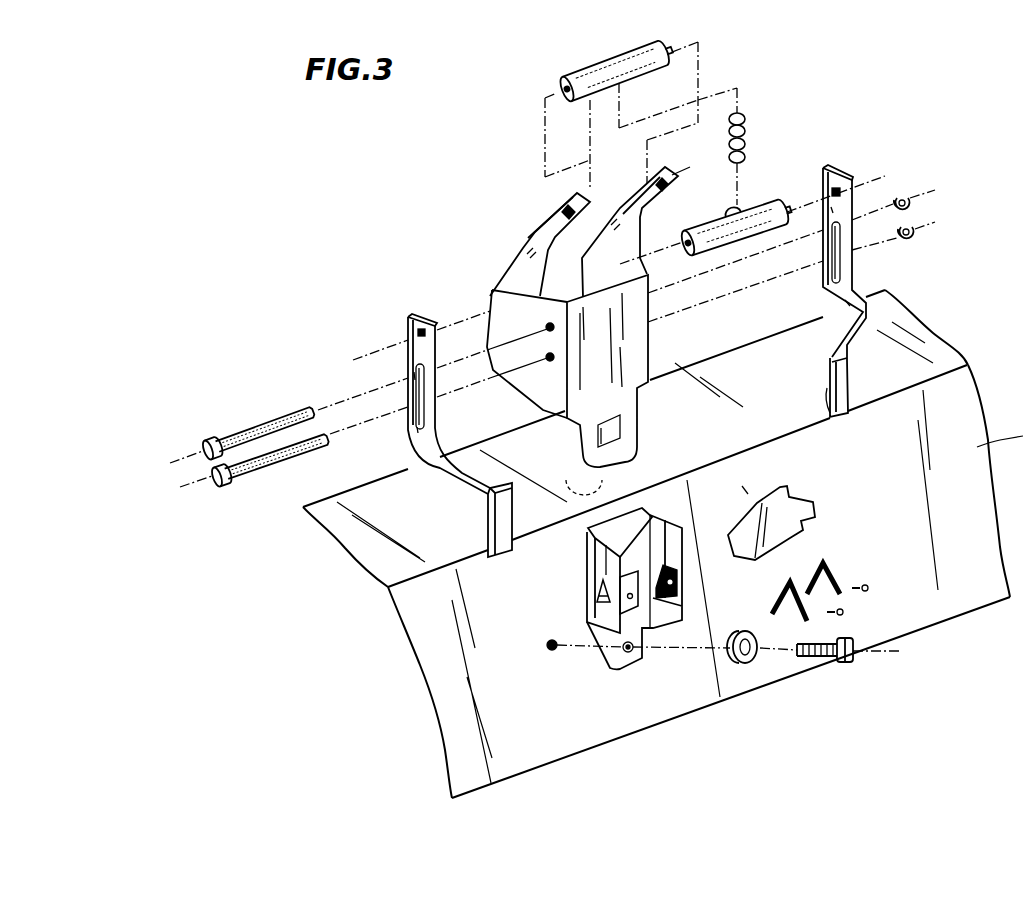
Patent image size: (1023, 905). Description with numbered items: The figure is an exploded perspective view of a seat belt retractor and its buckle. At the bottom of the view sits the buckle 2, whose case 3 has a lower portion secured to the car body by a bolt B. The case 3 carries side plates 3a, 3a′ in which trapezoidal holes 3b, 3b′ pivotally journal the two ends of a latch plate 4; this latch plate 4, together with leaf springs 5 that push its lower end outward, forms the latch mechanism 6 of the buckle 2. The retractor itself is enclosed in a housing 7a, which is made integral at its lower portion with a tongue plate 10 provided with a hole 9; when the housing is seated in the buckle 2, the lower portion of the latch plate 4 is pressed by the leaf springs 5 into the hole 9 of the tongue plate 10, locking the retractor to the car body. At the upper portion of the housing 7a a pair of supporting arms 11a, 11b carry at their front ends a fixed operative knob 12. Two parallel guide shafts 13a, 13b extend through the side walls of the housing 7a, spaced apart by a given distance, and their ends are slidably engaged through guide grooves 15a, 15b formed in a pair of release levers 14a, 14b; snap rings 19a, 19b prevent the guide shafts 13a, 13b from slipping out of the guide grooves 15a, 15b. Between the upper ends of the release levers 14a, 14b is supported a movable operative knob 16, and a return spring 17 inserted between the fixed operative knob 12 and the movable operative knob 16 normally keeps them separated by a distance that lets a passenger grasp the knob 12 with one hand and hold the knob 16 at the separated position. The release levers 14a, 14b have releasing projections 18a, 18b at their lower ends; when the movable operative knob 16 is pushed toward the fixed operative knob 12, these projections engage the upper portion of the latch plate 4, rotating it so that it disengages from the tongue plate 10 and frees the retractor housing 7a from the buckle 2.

The buckle 2 is at (601, 657).
The case 3 is at (638, 586).
The side plate 3a is at (598, 558).
The side plate 3a′ is at (668, 522).
The trapezoidal hole 3b is at (587, 595).
The trapezoidal hole 3b′ is at (682, 606).
The latch plate 4 is at (790, 506).
The leaf spring 5 is at (793, 580).
The latch mechanism 6 is at (745, 490).
The housing 7a is at (500, 290).
The hole 9 is at (603, 445).
The tongue plate 10 is at (585, 495).
The supporting arm 11a is at (545, 222).
The supporting arm 11b is at (650, 205).
The fixed operative knob 12 is at (627, 62).
The guide shaft 13a is at (268, 465).
The guide shaft 13b is at (273, 430).
The release lever 14a is at (422, 452).
The release lever 14b is at (858, 292).
The guide groove 15a is at (422, 392).
The guide groove 15b is at (832, 280).
The movable operative knob 16 is at (760, 210).
The return spring 17 is at (748, 126).
The releasing projection 18a is at (828, 418).
The releasing projection 18b is at (508, 505).
The snap ring 19a is at (915, 228).
The snap ring 19b is at (905, 193).
The bolt B is at (812, 662).